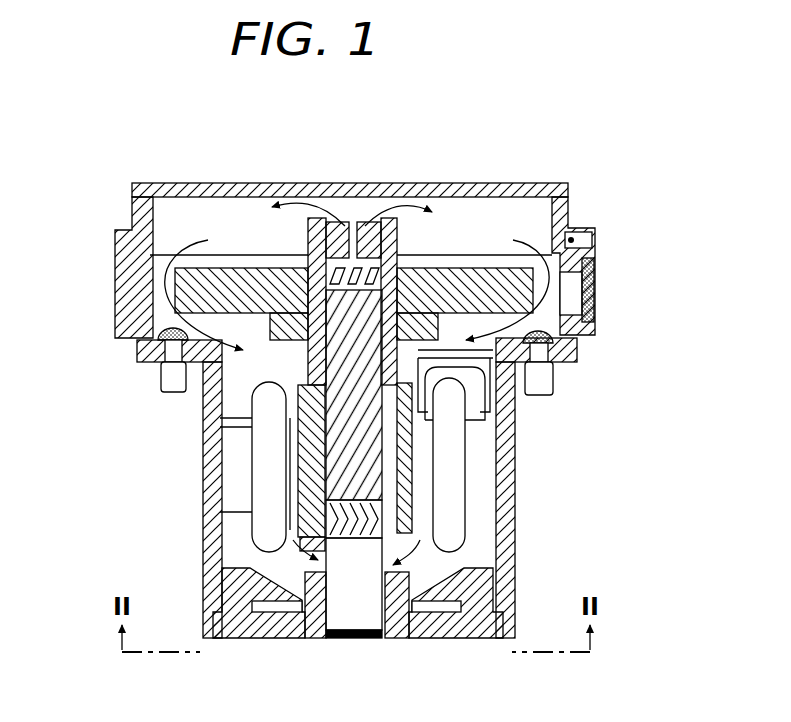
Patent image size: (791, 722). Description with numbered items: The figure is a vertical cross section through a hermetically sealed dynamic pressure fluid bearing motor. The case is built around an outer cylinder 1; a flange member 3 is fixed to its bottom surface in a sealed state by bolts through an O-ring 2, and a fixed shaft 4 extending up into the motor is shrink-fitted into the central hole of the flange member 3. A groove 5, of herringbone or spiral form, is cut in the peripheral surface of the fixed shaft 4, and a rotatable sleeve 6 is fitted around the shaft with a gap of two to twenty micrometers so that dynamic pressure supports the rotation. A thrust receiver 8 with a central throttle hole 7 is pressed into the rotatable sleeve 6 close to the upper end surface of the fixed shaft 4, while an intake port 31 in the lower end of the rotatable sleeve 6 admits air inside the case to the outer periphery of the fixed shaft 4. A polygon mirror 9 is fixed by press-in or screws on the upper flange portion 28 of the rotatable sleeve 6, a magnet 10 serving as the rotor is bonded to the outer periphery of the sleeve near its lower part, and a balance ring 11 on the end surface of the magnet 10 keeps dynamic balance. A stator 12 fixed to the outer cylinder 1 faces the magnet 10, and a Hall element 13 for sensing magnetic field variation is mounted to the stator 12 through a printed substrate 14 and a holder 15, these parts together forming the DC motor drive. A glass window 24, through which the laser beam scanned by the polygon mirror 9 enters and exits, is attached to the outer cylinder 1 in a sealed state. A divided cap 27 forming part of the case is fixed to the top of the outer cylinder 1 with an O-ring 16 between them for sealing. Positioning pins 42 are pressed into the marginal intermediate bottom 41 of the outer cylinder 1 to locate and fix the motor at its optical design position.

The outer cylinder 1 is at (118, 300).
The O-ring 2 is at (450, 612).
The flange member 3 is at (412, 630).
The fixed shaft 4 is at (360, 603).
The groove 5 is at (405, 540).
The rotatable sleeve 6 is at (385, 495).
The throttle hole 7 is at (345, 245).
The thrust receiver 8 is at (368, 240).
The polygon mirror 9 is at (262, 275).
The magnet 10 is at (305, 505).
The balance ring 11 is at (305, 545).
The stator 12 is at (262, 476).
The Hall element 13 is at (405, 475).
The printed substrate 14 is at (478, 402).
The holder 15 is at (425, 403).
The O-ring 16 is at (592, 238).
The glass window 24 is at (596, 288).
The cap 27 is at (230, 188).
The upper flange portion 28 is at (429, 335).
The intake port 31 is at (320, 634).
The intermediate bottom 41 is at (142, 352).
The positioning pins 42 is at (165, 378).